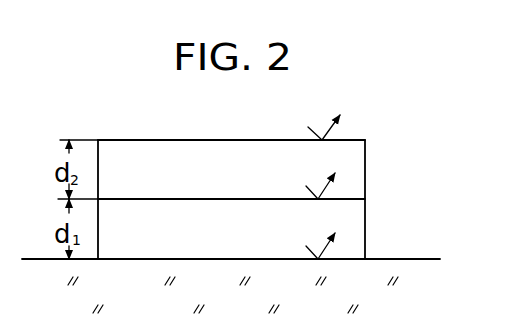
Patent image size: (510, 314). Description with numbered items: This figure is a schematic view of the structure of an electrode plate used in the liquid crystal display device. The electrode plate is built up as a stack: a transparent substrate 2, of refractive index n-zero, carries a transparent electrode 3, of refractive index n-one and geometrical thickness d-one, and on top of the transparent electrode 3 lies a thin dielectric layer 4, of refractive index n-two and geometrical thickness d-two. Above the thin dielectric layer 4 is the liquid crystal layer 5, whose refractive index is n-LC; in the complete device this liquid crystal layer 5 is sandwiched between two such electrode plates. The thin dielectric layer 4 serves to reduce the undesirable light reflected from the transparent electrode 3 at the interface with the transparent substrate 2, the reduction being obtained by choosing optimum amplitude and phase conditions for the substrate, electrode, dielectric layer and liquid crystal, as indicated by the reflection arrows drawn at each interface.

The transparent substrate 2 is at (412, 295).
The transparent electrode 3 is at (353, 236).
The thin dielectric layer 4 is at (353, 171).
The liquid crystal layer 5 is at (352, 124).